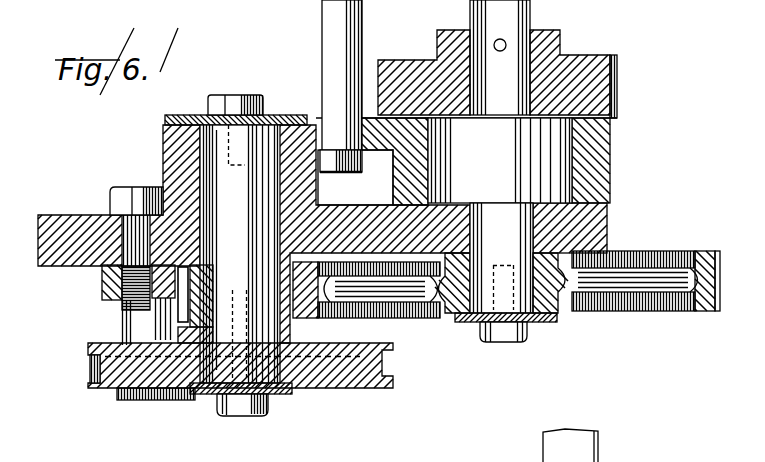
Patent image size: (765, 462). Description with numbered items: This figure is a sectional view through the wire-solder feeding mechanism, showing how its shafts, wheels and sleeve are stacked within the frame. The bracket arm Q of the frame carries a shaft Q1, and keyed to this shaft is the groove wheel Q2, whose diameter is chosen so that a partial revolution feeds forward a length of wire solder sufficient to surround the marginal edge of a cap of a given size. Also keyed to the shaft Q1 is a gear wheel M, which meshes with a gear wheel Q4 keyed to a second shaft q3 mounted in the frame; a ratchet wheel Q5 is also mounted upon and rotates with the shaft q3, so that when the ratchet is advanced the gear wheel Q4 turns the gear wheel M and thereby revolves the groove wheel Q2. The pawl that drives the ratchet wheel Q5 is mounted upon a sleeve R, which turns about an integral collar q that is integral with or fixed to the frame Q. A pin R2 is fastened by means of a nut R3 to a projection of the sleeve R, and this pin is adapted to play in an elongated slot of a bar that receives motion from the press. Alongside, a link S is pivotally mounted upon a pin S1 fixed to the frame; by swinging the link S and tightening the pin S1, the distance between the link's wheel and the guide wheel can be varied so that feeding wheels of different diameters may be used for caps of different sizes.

The bracket arm Q is at (54, 215).
The shaft Q1 is at (243, 397).
The groove wheel Q2 is at (333, 390).
The gear wheel Q4 is at (625, 312).
The ratchet wheel Q5 is at (619, 83).
The integral collar q is at (500, 230).
The shaft q3 is at (510, 30).
The sleeve R is at (600, 160).
The pin R2 is at (332, 40).
The nut R3 is at (348, 176).
The link S is at (103, 285).
The pin S1 is at (128, 318).
The gear wheel M is at (264, 303).